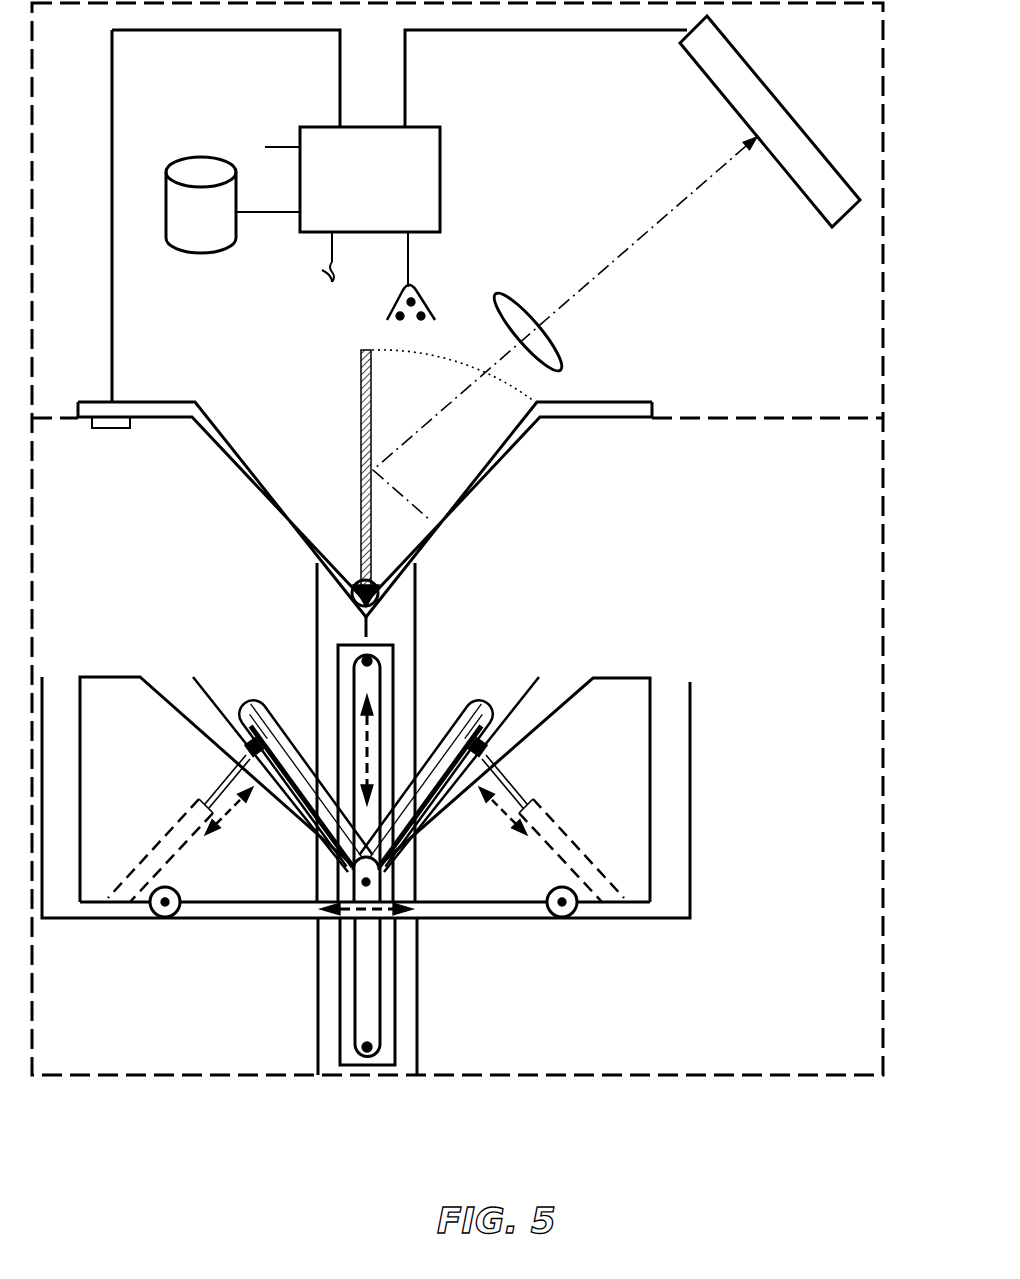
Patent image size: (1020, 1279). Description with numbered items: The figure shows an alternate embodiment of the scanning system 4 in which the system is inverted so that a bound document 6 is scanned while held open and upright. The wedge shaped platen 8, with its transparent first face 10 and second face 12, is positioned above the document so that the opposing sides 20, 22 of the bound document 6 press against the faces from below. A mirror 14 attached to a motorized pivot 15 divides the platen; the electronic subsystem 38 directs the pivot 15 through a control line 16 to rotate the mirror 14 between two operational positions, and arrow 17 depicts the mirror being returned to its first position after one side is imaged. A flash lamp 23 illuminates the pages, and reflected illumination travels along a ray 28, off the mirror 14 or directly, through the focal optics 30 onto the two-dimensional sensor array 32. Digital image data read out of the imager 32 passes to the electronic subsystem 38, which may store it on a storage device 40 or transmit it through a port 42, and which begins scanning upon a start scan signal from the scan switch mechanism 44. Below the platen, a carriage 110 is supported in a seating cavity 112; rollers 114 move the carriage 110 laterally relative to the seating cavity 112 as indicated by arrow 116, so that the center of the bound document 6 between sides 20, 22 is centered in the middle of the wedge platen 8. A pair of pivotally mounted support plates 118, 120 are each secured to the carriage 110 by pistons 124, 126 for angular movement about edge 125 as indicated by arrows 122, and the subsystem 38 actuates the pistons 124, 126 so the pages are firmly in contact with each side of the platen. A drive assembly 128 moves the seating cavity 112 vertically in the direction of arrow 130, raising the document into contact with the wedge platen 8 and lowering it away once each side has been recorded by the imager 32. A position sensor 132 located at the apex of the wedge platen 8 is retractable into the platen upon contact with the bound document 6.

The scanning system 4 is at (736, 1078).
The bound document 6 is at (458, 692).
The wedge shaped platen 8 is at (320, 478).
The first face 10 is at (232, 455).
The second face 12 is at (475, 481).
The mirror 14 is at (360, 425).
The pivot 15 is at (353, 600).
The control line 16 is at (332, 272).
The arrow 17 is at (450, 356).
The side of bound document 20 is at (254, 696).
The side of bound document 22 is at (479, 700).
The flash lamp 23 is at (436, 300).
The ray 28 is at (622, 258).
The focal optics 30 is at (550, 343).
The two-dimensional sensor array 32 is at (770, 90).
The electronic subsystem 38 is at (440, 173).
The storage device 40 is at (201, 157).
The port 42 is at (262, 160).
The scan switch mechanism 44 is at (112, 430).
The carriage 110 is at (622, 678).
The seating cavity 112 is at (692, 772).
The rollers 114 is at (184, 914).
The arrow 116 is at (392, 918).
The support plate 118 is at (200, 688).
The support plate 120 is at (530, 693).
The arrows 122 is at (233, 808).
The piston 124 is at (163, 834).
The edge 125 is at (362, 882).
The piston 126 is at (563, 834).
The drive assembly 128 is at (318, 1010).
The arrow 130 is at (363, 741).
The position sensor 132 is at (372, 630).